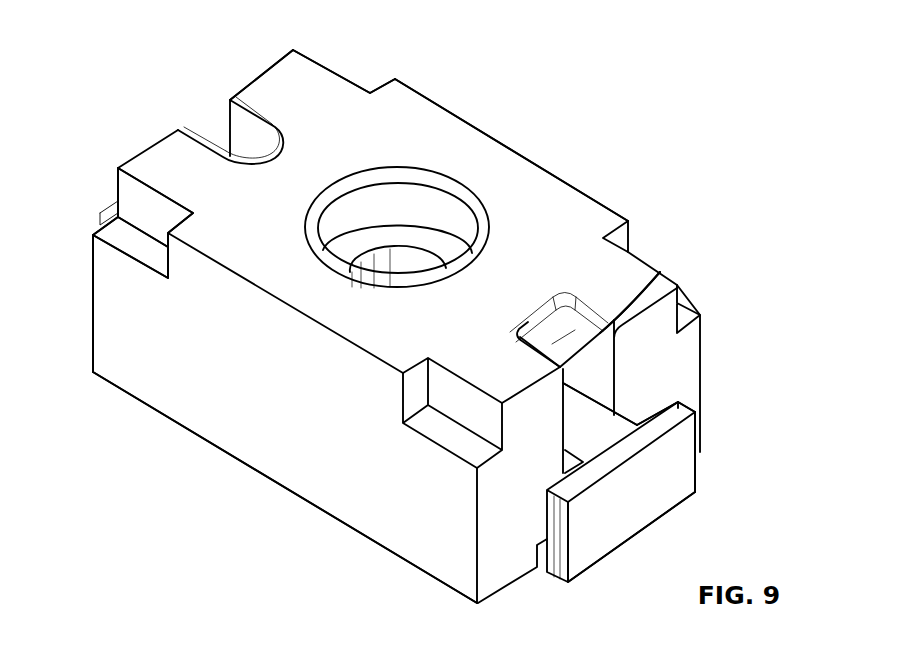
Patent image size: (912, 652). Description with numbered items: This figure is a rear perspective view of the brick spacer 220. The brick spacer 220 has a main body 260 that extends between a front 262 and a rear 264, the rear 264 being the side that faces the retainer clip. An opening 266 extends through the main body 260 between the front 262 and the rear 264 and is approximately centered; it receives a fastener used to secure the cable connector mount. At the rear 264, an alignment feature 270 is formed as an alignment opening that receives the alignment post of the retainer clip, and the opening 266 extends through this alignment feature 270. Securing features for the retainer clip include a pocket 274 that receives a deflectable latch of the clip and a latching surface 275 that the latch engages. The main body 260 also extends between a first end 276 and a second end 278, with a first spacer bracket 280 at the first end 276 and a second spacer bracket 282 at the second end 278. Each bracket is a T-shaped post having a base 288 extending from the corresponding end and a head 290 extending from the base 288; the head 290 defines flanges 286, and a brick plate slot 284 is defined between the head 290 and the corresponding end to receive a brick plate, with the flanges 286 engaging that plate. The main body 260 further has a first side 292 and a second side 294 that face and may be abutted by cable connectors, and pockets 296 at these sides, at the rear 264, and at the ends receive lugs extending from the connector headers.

The brick spacer 220 is at (612, 124).
The main body 260 is at (298, 452).
The front 262 is at (337, 520).
The rear 264 is at (590, 205).
The opening 266 is at (414, 260).
The alignment feature 270 is at (409, 195).
The pocket 274 is at (580, 366).
The latching surface 275 is at (658, 271).
The first end 276 is at (257, 73).
The second end 278 is at (500, 570).
The first spacer bracket 280 is at (110, 215).
The second spacer bracket 282 is at (632, 522).
The brick plate slot 284 is at (660, 395).
The flange 286 is at (678, 413).
The base 288 is at (605, 423).
The head 290 is at (667, 483).
The first side 292 is at (193, 412).
The second side 294 is at (575, 235).
The pocket 296 is at (371, 80).